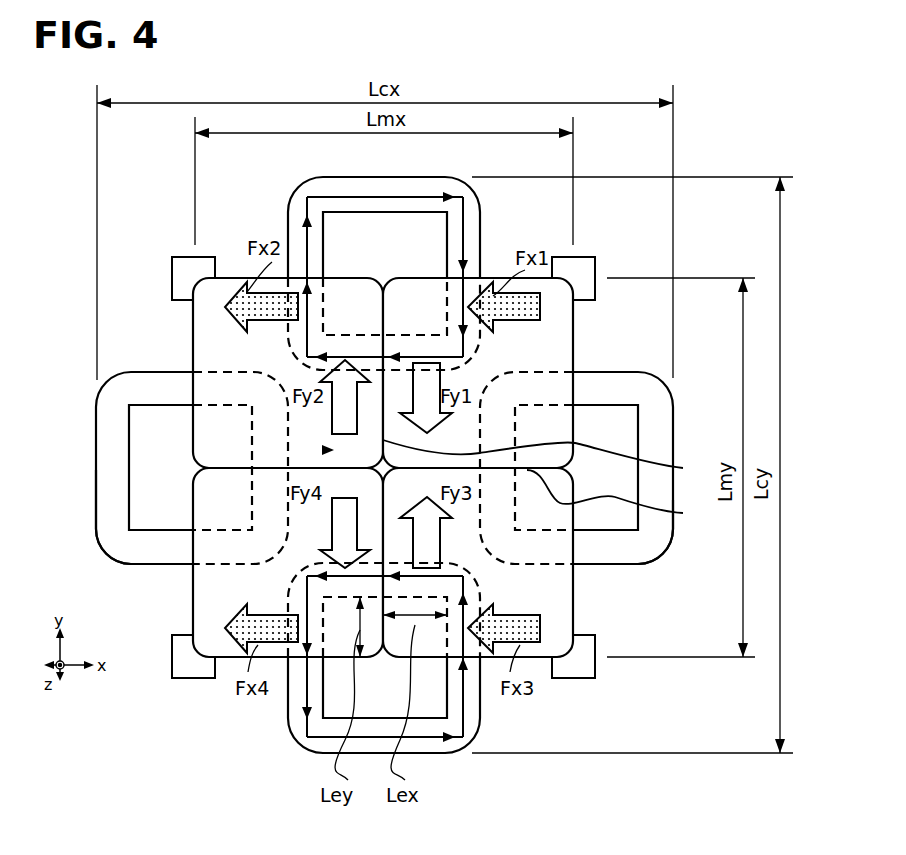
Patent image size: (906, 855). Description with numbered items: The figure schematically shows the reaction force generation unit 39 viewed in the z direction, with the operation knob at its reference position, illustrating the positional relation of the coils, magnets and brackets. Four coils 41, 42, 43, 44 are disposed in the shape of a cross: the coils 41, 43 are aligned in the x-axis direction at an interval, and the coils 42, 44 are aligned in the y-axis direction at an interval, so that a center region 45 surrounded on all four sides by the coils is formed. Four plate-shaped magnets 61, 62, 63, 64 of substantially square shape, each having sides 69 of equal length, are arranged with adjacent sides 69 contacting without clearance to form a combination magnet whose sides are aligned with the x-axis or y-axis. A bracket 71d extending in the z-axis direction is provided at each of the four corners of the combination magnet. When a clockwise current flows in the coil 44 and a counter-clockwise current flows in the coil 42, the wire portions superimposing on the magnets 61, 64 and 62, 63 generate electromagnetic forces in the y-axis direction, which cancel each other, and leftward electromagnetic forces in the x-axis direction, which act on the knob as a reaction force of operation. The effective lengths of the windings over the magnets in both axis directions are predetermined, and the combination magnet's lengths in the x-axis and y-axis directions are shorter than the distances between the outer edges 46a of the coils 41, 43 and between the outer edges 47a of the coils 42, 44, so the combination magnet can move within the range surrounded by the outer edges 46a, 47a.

The reaction force generation unit 39 is at (397, 424).
The coil 41 is at (657, 416).
The coil 42 is at (472, 718).
The coil 43 is at (108, 416).
The coil 44 is at (480, 240).
The center region 45 is at (330, 450).
The outer edge 46a is at (96, 492).
The outer edge 47a is at (392, 177).
The magnet 61 is at (548, 361).
The magnet 62 is at (548, 601).
The magnet 63 is at (278, 601).
The magnet 64 is at (278, 361).
The side 69 is at (546, 482).
The bracket 71d is at (183, 272).